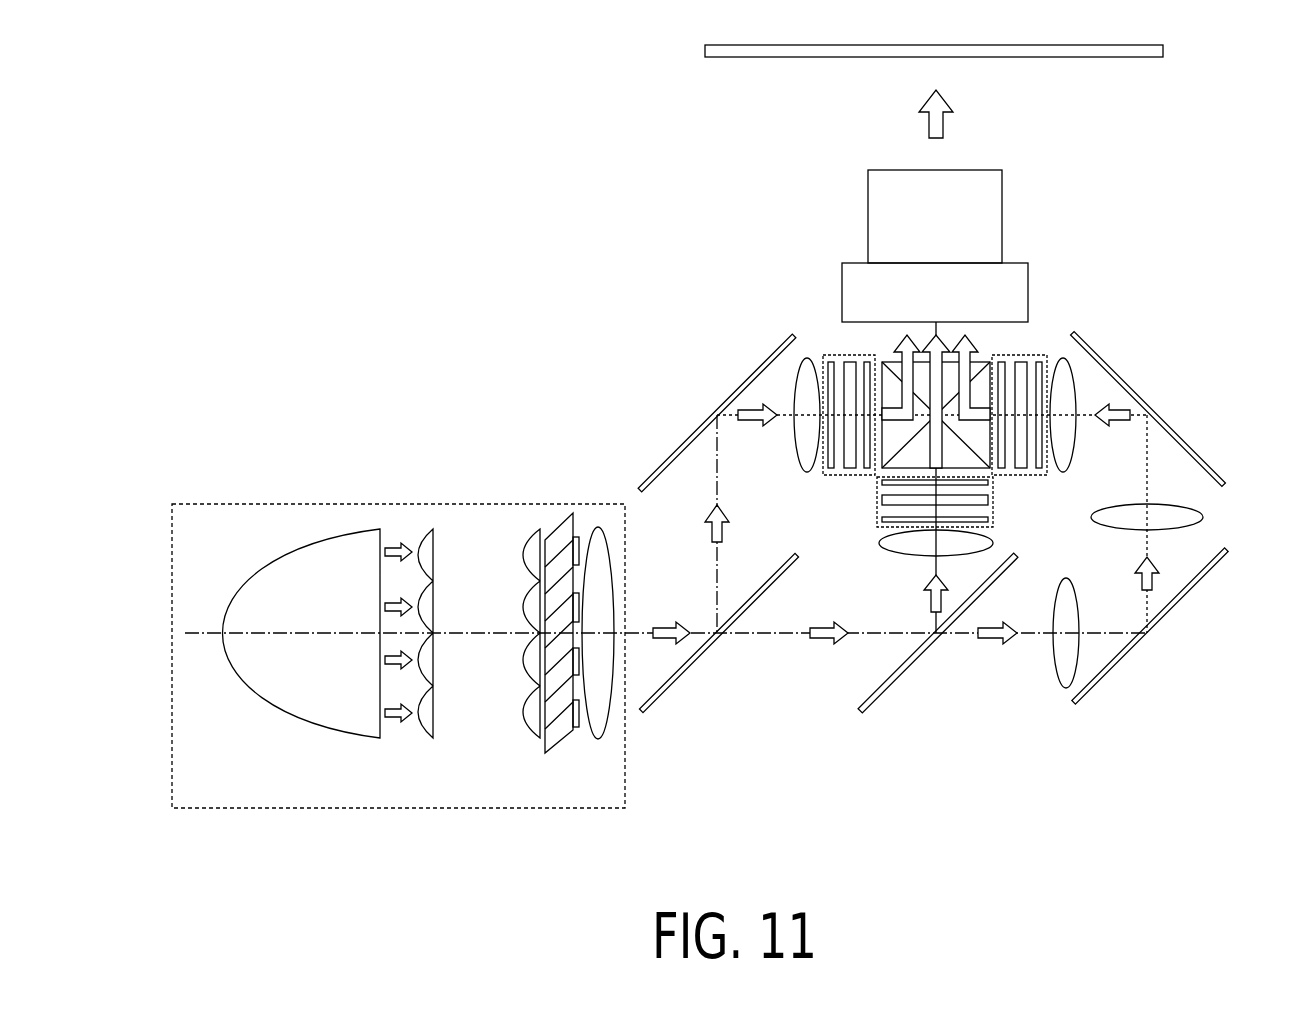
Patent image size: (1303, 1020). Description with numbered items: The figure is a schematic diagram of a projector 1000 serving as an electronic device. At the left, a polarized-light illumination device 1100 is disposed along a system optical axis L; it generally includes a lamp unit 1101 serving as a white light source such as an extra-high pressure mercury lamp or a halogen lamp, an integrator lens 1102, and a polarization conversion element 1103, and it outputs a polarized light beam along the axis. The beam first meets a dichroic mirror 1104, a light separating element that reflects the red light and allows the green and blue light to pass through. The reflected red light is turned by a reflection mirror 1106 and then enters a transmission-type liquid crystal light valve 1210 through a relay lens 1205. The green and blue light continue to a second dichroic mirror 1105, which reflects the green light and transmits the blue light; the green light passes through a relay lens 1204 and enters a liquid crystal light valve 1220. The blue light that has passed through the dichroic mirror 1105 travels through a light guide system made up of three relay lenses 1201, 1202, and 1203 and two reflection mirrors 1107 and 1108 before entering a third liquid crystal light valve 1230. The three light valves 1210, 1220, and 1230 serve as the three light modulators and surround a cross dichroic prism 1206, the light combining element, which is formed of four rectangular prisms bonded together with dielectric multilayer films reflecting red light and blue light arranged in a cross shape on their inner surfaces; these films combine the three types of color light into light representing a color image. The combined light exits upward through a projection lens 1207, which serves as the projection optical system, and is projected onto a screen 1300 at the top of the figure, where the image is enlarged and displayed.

The projector 1000 is at (1222, 170).
The polarized-light illumination device 1100 is at (413, 502).
The system optical axis L is at (203, 628).
The lamp unit 1101 is at (295, 722).
The integrator lens 1102 is at (432, 740).
The polarization conversion element 1103 is at (523, 757).
The dichroic mirror 1104 is at (682, 678).
The dichroic mirror 1105 is at (902, 678).
The reflection mirror 1106 is at (712, 408).
The reflection mirror 1107 is at (1113, 668).
The reflection mirror 1108 is at (1147, 402).
The relay lens 1201 is at (1066, 688).
The relay lens 1202 is at (1203, 513).
The relay lens 1203 is at (1063, 477).
The relay lens 1204 is at (878, 543).
The relay lens 1205 is at (807, 477).
The cross dichroic prism 1206 is at (975, 362).
The projection lens 1207 is at (992, 212).
The liquid crystal light valve 1210 is at (840, 353).
The liquid crystal light valve 1220 is at (1000, 522).
The liquid crystal light valve 1230 is at (1033, 353).
The screen 1300 is at (1088, 60).